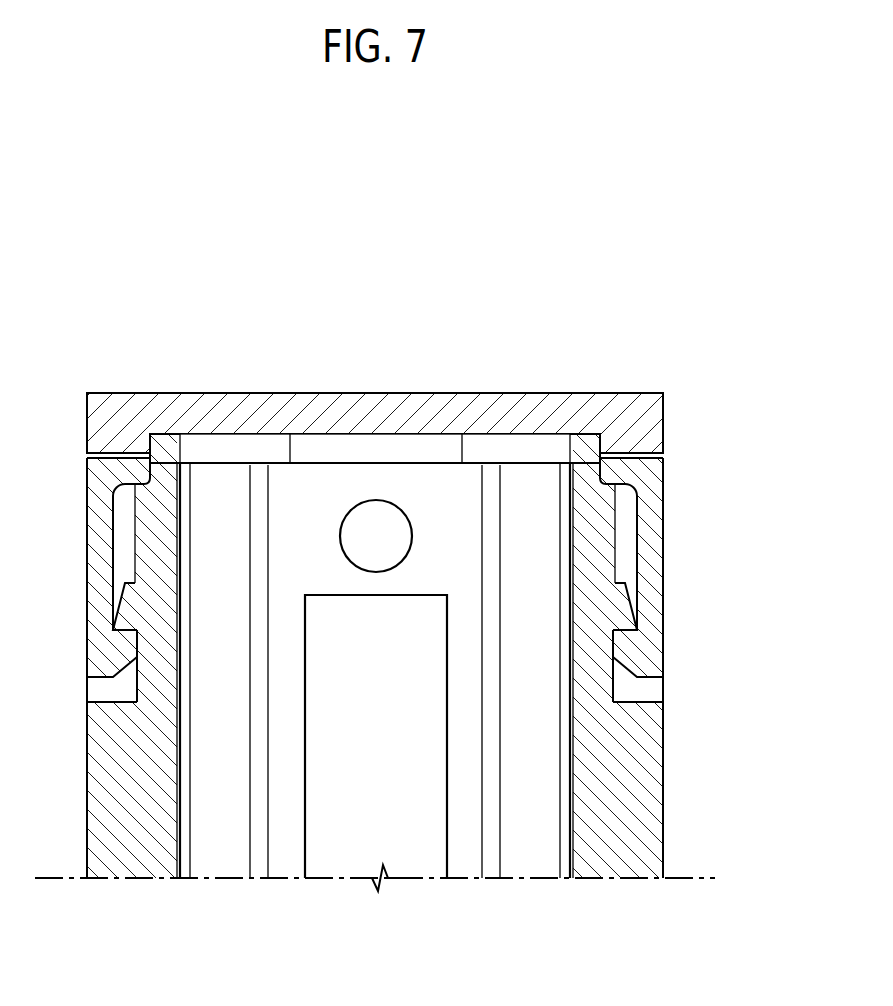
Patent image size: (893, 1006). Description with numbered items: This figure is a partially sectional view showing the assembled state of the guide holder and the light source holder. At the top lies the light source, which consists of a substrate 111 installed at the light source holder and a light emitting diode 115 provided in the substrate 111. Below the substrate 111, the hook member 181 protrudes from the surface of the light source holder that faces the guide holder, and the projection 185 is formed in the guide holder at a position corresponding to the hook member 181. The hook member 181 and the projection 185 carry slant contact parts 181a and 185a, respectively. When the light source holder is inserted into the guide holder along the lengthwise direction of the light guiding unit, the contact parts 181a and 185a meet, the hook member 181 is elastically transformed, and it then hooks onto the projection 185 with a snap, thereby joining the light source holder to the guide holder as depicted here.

The substrate 111 is at (645, 422).
The light emitting diode 115 is at (462, 450).
The hook member 181 is at (652, 532).
The slant contact part 181a is at (628, 670).
The projection 185 is at (620, 612).
The slant contact part 185a is at (633, 588).